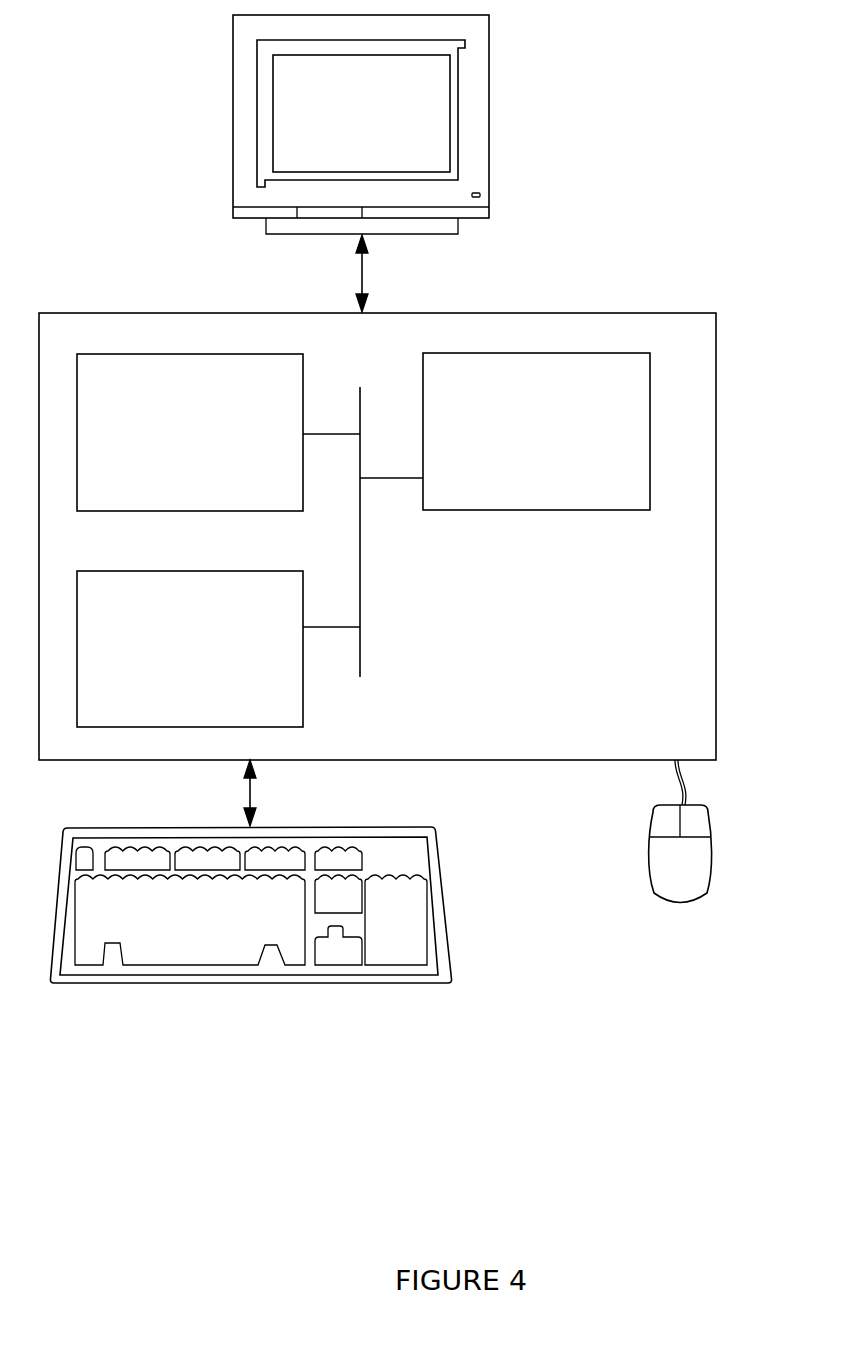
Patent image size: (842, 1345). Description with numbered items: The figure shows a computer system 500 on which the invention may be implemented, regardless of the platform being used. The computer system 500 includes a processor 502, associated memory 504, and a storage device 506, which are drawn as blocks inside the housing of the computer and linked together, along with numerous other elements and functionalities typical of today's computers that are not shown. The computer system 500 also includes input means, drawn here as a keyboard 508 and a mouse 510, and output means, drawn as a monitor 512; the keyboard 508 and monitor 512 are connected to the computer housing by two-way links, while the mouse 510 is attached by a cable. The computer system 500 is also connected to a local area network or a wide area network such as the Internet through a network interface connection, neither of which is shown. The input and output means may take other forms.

The computer system 500 is at (690, 183).
The processor 502 is at (575, 441).
The memory 504 is at (211, 442).
The storage device 506 is at (208, 659).
The keyboard 508 is at (204, 944).
The mouse 510 is at (701, 877).
The monitor 512 is at (381, 131).